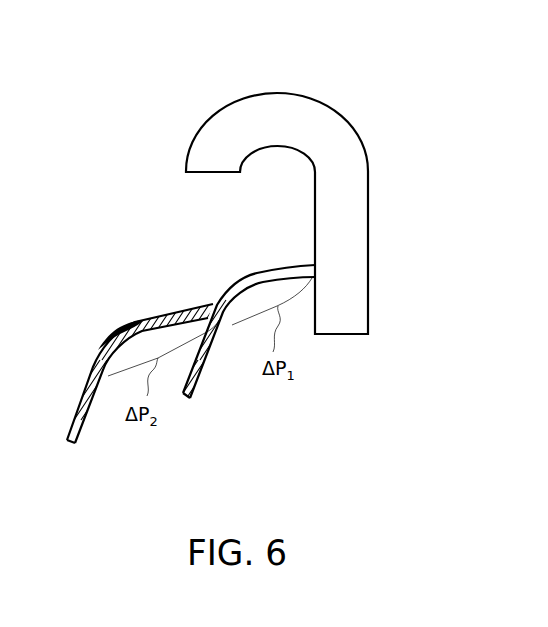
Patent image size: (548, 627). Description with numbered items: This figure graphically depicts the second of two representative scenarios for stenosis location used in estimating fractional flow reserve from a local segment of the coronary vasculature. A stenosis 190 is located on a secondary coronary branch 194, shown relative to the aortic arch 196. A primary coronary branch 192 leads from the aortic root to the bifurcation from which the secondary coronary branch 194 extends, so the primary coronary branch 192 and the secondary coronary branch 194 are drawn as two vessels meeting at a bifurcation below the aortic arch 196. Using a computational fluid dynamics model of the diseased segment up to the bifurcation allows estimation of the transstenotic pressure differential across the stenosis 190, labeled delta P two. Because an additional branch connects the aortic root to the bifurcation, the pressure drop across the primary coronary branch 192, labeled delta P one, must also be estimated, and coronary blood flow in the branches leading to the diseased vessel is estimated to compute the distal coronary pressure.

The stenosis 190 is at (107, 335).
The primary coronary branch 192 is at (281, 270).
The secondary coronary branch 194 is at (204, 304).
The aortic arch 196 is at (337, 108).